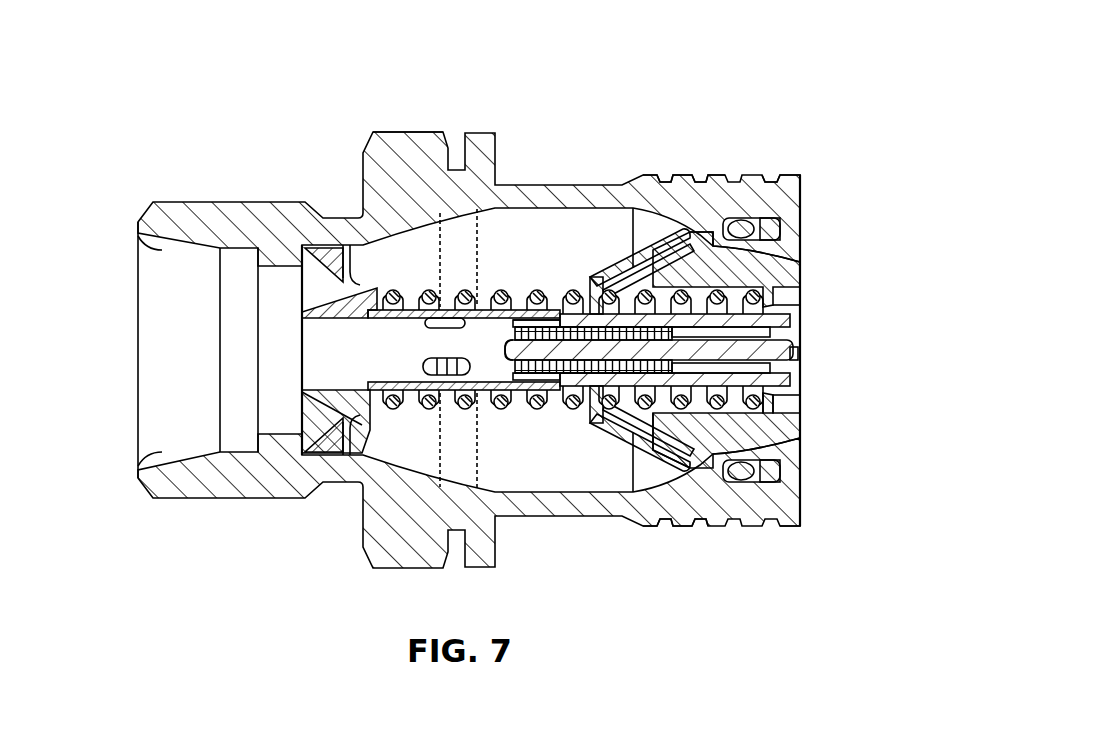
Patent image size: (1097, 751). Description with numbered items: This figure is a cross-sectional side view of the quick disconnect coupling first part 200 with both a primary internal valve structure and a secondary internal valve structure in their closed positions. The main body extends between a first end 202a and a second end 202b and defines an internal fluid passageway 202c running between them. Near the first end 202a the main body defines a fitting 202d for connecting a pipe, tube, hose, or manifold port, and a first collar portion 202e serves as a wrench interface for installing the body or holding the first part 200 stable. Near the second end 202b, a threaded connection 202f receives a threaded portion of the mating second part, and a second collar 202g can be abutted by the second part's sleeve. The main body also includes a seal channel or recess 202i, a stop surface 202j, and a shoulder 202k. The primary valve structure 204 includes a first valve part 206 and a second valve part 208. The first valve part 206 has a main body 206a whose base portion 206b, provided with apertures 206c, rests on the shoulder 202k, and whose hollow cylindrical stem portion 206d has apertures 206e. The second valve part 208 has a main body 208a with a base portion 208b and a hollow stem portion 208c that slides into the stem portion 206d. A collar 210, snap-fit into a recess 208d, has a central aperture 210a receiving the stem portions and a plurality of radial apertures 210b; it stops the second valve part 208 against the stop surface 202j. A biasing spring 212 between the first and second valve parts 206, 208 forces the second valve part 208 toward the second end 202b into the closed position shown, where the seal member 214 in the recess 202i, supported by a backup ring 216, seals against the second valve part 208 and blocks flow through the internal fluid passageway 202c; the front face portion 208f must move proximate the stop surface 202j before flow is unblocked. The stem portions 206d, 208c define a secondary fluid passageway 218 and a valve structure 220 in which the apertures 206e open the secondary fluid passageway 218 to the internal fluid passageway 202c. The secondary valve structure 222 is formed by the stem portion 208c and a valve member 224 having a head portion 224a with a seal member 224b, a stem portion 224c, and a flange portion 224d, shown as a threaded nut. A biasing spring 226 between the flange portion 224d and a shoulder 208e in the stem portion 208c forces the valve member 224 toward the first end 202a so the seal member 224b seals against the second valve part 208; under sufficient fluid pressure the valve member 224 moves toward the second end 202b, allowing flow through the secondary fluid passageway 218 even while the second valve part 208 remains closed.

The first part 200 is at (153, 70).
The first end 202a is at (137, 416).
The second end 202b is at (800, 468).
The internal fluid passageway 202c is at (236, 428).
The fitting 202d is at (140, 246).
The first collar portion 202e is at (408, 160).
The threaded connection 202f is at (694, 182).
The second collar 202g is at (476, 212).
The seal channel or recess 202i is at (786, 195).
The stop surface 202j is at (668, 474).
The shoulder 202k is at (302, 263).
The valve structure 204 is at (386, 404).
The first valve part 206 is at (333, 440).
The main body 206a is at (487, 393).
The base portion 206b is at (333, 430).
The collet head 206c is at (318, 287).
The stem portion 206d is at (355, 370).
The apertures 206e is at (448, 320).
The second valve part 208 is at (790, 297).
The main body 208a is at (790, 378).
The base portion 208b is at (718, 444).
The stem portion 208c is at (762, 430).
The recess 208d is at (795, 270).
The shoulder 208e is at (800, 360).
The front face portion 208f is at (795, 410).
The collar 210 is at (640, 262).
The central aperture 210a is at (596, 400).
The radial apertures 210b is at (620, 274).
The biasing spring 212 is at (632, 266).
The seal member 214 is at (748, 225).
The backup ring 216 is at (781, 238).
The secondary fluid passageway 218 is at (312, 345).
The valve structure 220 is at (428, 292).
The valve structure 222 is at (795, 340).
The valve member 224 is at (795, 352).
The head portion 224a is at (795, 366).
The seal member 224b is at (797, 330).
The stem portion 224c is at (537, 360).
The flange portion 224d is at (538, 294).
The biasing spring 226 is at (660, 326).